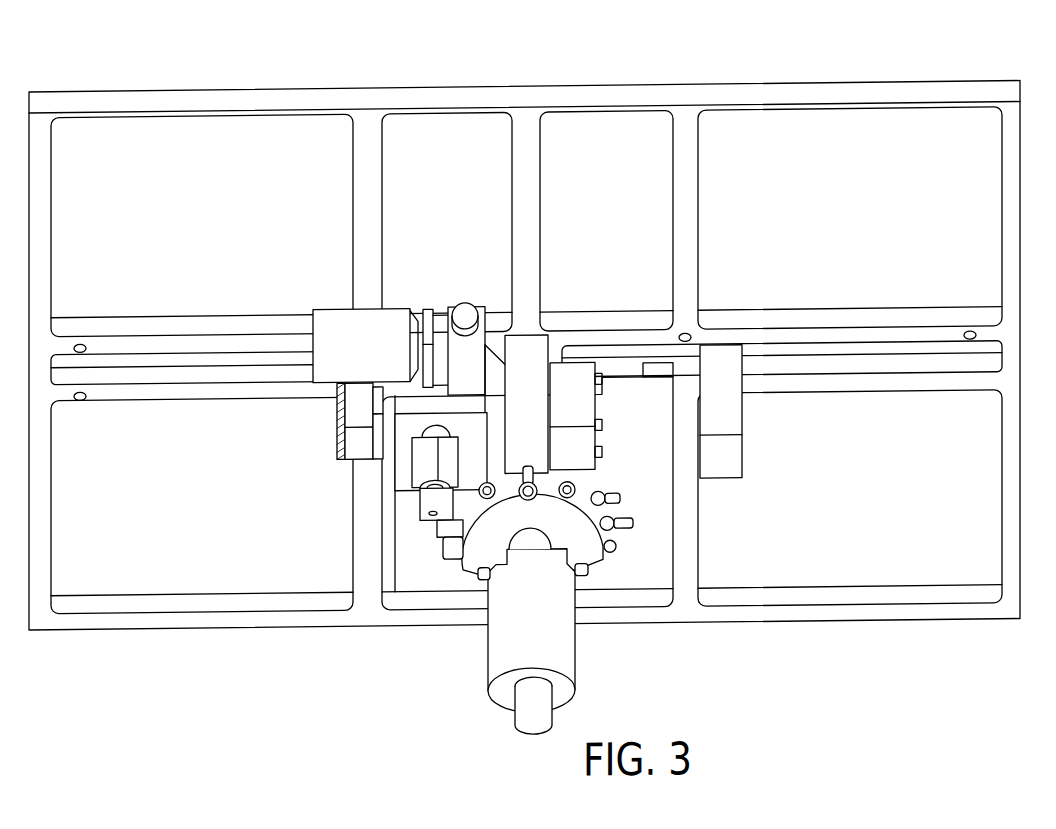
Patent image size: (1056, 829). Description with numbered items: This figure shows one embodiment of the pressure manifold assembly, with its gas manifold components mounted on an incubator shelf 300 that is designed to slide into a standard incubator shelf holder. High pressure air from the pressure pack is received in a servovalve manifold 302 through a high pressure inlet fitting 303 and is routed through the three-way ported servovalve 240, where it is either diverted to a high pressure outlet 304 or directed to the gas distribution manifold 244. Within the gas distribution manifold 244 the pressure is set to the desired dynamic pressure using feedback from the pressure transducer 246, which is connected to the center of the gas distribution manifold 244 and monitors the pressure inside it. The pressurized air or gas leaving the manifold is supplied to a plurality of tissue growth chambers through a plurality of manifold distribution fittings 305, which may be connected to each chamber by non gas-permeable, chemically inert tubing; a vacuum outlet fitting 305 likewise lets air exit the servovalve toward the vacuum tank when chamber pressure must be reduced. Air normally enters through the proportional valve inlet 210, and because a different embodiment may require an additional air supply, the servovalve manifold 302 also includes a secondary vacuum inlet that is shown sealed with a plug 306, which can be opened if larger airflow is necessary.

The incubator shelf 300 is at (770, 66).
The proportional valve inlet 210 is at (332, 333).
The servovalve manifold 302 is at (532, 360).
The high pressure inlet fitting 303 is at (337, 443).
The high pressure outlet 304 is at (335, 406).
The manifold distribution fittings 305 is at (580, 546).
The plug 306 is at (422, 472).
The servovalve 240 is at (647, 442).
The gas distribution manifold 244 is at (605, 545).
The pressure transducer 246 is at (490, 660).